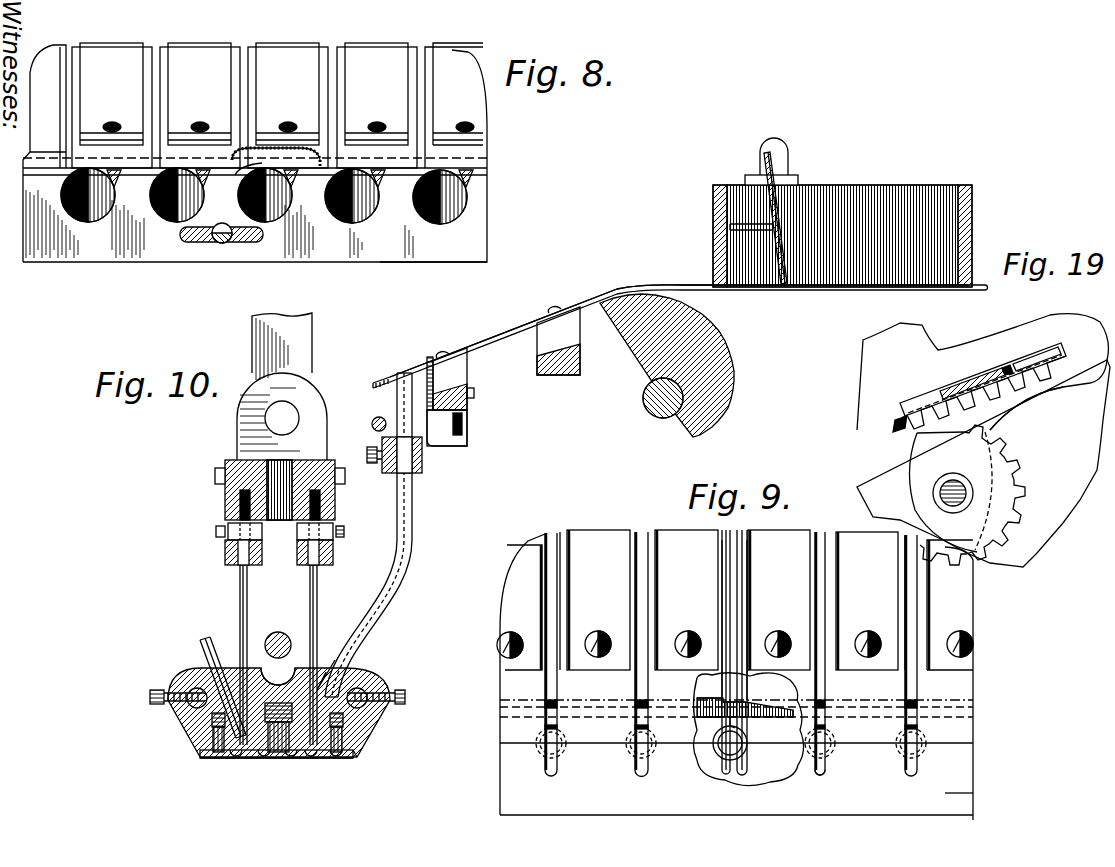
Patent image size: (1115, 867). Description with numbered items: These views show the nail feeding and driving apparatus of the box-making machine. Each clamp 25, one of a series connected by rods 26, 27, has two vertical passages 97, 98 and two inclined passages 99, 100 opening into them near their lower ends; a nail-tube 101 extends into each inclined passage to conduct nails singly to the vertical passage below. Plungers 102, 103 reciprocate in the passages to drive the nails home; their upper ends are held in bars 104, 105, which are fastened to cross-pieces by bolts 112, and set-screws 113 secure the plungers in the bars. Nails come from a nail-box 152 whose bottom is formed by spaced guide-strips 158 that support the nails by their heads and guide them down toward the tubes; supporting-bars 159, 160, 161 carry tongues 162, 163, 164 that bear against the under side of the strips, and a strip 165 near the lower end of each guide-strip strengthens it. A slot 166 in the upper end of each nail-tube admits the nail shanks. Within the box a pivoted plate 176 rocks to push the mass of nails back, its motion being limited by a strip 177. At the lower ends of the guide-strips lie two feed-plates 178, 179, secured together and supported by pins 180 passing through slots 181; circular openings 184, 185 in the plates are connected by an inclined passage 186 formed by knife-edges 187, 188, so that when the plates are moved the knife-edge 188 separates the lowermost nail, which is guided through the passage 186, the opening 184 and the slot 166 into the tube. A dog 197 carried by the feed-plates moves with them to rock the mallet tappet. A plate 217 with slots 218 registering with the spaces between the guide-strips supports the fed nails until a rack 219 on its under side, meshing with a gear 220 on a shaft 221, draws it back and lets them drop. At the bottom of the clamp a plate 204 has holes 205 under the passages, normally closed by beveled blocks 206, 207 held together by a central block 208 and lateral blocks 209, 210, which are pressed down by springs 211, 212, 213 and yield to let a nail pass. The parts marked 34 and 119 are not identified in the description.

In FIG. 10, the clamp 25 is at (384, 682).
In FIG. 10, the rod 26 is at (370, 702).
In FIG. 10, the rod 27 is at (178, 712).
In FIG. 10, the shaft 34 is at (278, 632).
In FIG. 10, the vertical passage 97 is at (278, 674).
In FIG. 10, the vertical passage 98 is at (310, 680).
In FIG. 10, the inclined passage 99 is at (230, 672).
In FIG. 10, the inclined passage 100 is at (352, 670).
In FIG. 10, the nail-tube 101 is at (405, 524).
In FIG. 9, the nail-tube 101 is at (548, 760).
In FIG. 10, the plunger 102 is at (318, 598).
In FIG. 10, the plunger 103 is at (238, 590).
In FIG. 10, the bar 104 is at (334, 504).
In FIG. 10, the bar 105 is at (228, 512).
In FIG. 10, the bolt 112 is at (216, 474).
In FIG. 10, the set-screw 113 is at (344, 531).
In FIG. 10, the slot 119 is at (316, 500).
In FIG. 10, the nail-box 152 is at (905, 192).
In FIG. 10, the guide-strip 158 is at (592, 305).
In FIG. 9, the guide-strip 158 is at (560, 540).
In FIG. 8, the supporting-bar 159 is at (452, 202).
In FIG. 10, the supporting-bar 159 is at (468, 392).
In FIG. 10, the supporting-bar 160 is at (562, 374).
In FIG. 10, the supporting-bar 161 is at (722, 351).
In FIG. 8, the tongue 162 is at (428, 200).
In FIG. 10, the tongue 162 is at (449, 379).
In FIG. 10, the tongue 163 is at (558, 341).
In FIG. 10, the tongue 164 is at (650, 361).
In FIG. 8, the strip 165 is at (277, 105).
In FIG. 10, the strip 165 is at (493, 337).
In FIG. 9, the strip 165 is at (735, 600).
In FIG. 10, the slot 166 is at (400, 398).
In FIG. 9, the slot 166 is at (547, 734).
In FIG. 10, the plate 176 is at (790, 225).
In FIG. 9, the plate 176 is at (714, 718).
In FIG. 10, the strip 177 is at (713, 205).
In FIG. 8, the feed-plate 178 is at (433, 248).
In FIG. 10, the feed-plate 178 is at (418, 371).
In FIG. 8, the feed-plate 179 is at (283, 175).
In FIG. 10, the feed-plate 179 is at (442, 357).
In FIG. 9, the feed-plate 179 is at (749, 729).
In FIG. 8, the pin 180 is at (214, 244).
In FIG. 8, the slot 181 is at (252, 244).
In FIG. 9, the circular opening 184 is at (776, 718).
In FIG. 9, the circular opening 185 is at (718, 698).
In FIG. 9, the inclined passage 186 is at (748, 703).
In FIG. 8, the knife-edge 187 is at (240, 178).
In FIG. 9, the knife-edge 187 is at (742, 719).
In FIG. 9, the knife-edge 188 is at (735, 700).
In FIG. 10, the dog 197 is at (440, 447).
In FIG. 10, the plate 204 is at (342, 758).
In FIG. 10, the hole 205 is at (240, 755).
In FIG. 10, the block 206 is at (298, 762).
In FIG. 10, the block 207 is at (336, 763).
In FIG. 10, the central block 208 is at (275, 756).
In FIG. 10, the lateral block 209 is at (356, 748).
In FIG. 10, the lateral block 210 is at (213, 735).
In FIG. 10, the spring 211 is at (281, 715).
In FIG. 10, the spring 212 is at (344, 726).
In FIG. 10, the spring 213 is at (206, 664).
In FIG. 10, the plate 217 is at (373, 386).
In FIG. 9, the plate 217 is at (945, 793).
In FIG. 19, the plate 217 is at (1020, 355).
In FIG. 10, the slot 218 is at (428, 362).
In FIG. 9, the slot 218 is at (815, 775).
In FIG. 19, the slot 218 is at (1048, 356).
In FIG. 10, the rack 219 is at (367, 440).
In FIG. 19, the rack 219 is at (1028, 385).
In FIG. 19, the gear 220 is at (967, 495).
In FIG. 10, the shaft 221 is at (372, 423).
In FIG. 19, the shaft 221 is at (933, 496).